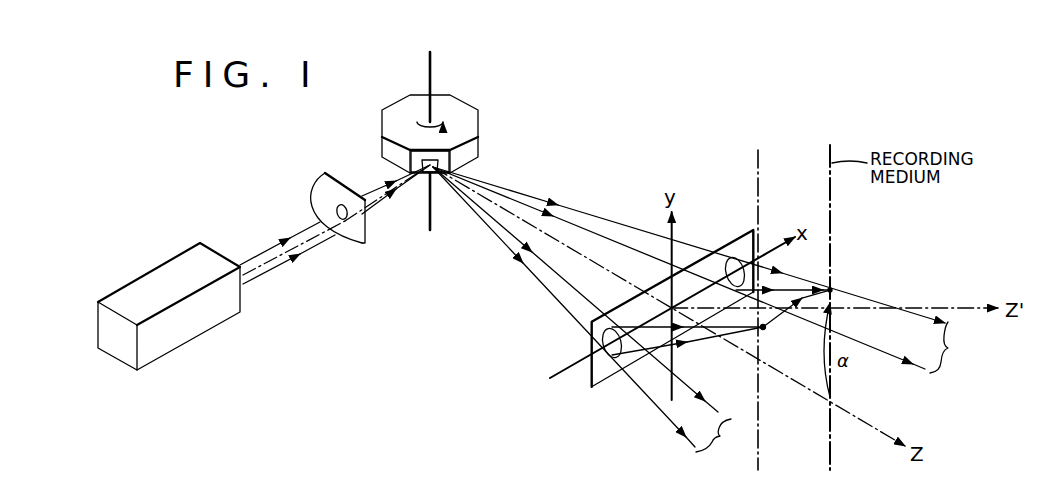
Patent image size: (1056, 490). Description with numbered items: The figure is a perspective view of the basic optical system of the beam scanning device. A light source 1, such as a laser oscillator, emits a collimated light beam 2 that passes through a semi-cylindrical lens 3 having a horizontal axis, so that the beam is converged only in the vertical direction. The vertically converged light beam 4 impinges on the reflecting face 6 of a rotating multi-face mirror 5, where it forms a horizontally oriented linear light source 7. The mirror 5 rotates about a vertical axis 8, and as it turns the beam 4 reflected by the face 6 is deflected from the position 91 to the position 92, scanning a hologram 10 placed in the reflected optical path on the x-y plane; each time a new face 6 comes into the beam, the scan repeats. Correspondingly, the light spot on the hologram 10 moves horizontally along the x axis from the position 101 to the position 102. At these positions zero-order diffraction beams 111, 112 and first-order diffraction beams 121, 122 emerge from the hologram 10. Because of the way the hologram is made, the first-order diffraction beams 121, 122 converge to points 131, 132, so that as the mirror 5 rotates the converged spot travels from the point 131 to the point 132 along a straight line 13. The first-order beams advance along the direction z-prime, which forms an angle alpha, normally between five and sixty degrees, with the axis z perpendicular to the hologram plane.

The light source 1 is at (167, 273).
The collimated light beam 2 is at (260, 252).
The semi-cylindrical lens 3 is at (322, 188).
The vertically converged light beam 4 is at (372, 187).
The rotating multi-face mirror 5 is at (393, 105).
The reflecting face 6 is at (425, 176).
The linear light source 7 is at (438, 153).
The vertical axis 8 is at (433, 72).
The first deflected beam position 91 is at (543, 275).
The second deflected beam position 92 is at (608, 223).
The hologram 10 is at (756, 229).
The first scan position on hologram 101 is at (612, 358).
The second scan position on hologram 102 is at (730, 257).
The first zero-order diffraction beam 111 is at (726, 441).
The second zero-order diffraction beam 112 is at (955, 347).
The first first-order diffraction beam 121 is at (698, 335).
The second first-order diffraction beam 122 is at (793, 287).
The straight line 13 is at (782, 317).
The first convergence point 131 is at (765, 330).
The second convergence point 132 is at (832, 290).